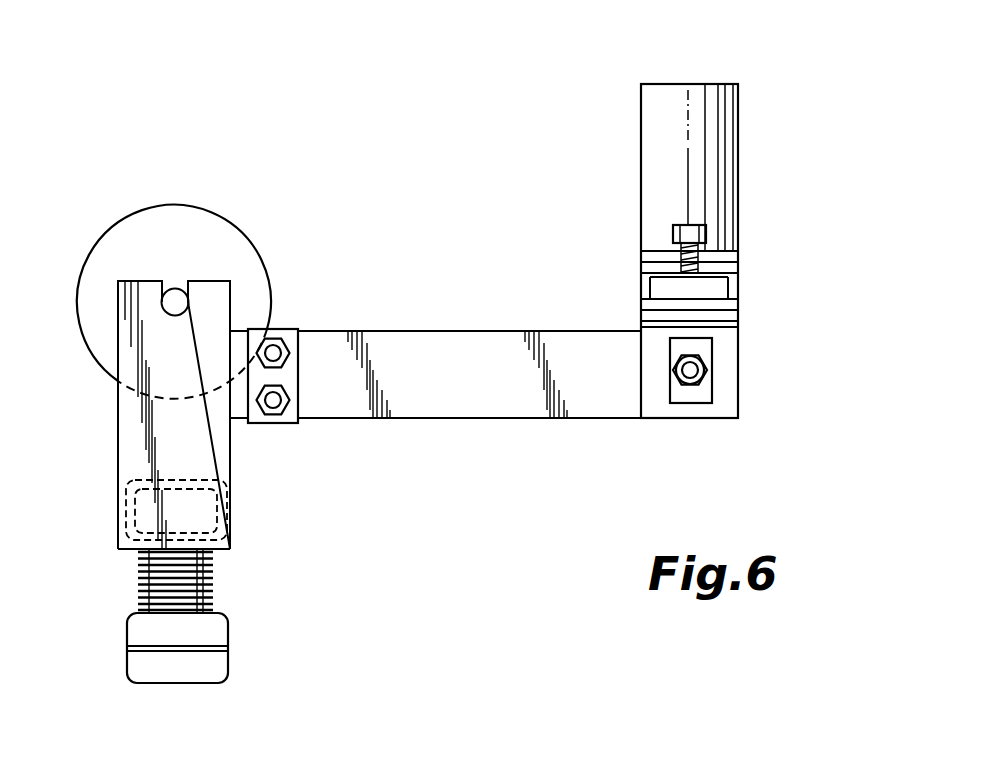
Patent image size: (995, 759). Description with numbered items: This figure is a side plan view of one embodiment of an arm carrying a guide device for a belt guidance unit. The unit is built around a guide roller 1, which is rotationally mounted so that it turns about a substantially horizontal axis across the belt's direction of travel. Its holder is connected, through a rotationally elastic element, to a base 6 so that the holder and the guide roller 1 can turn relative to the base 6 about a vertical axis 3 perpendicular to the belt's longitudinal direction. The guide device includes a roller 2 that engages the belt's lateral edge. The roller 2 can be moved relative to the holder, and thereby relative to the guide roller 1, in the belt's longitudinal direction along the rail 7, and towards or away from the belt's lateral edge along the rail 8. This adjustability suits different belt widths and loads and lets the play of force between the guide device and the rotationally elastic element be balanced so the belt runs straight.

The guide roller 1 is at (107, 262).
The roller 2 is at (723, 141).
The vertical axis 3 is at (213, 583).
The base 6 is at (215, 660).
The rail 7 is at (458, 397).
The rail 8 is at (713, 288).